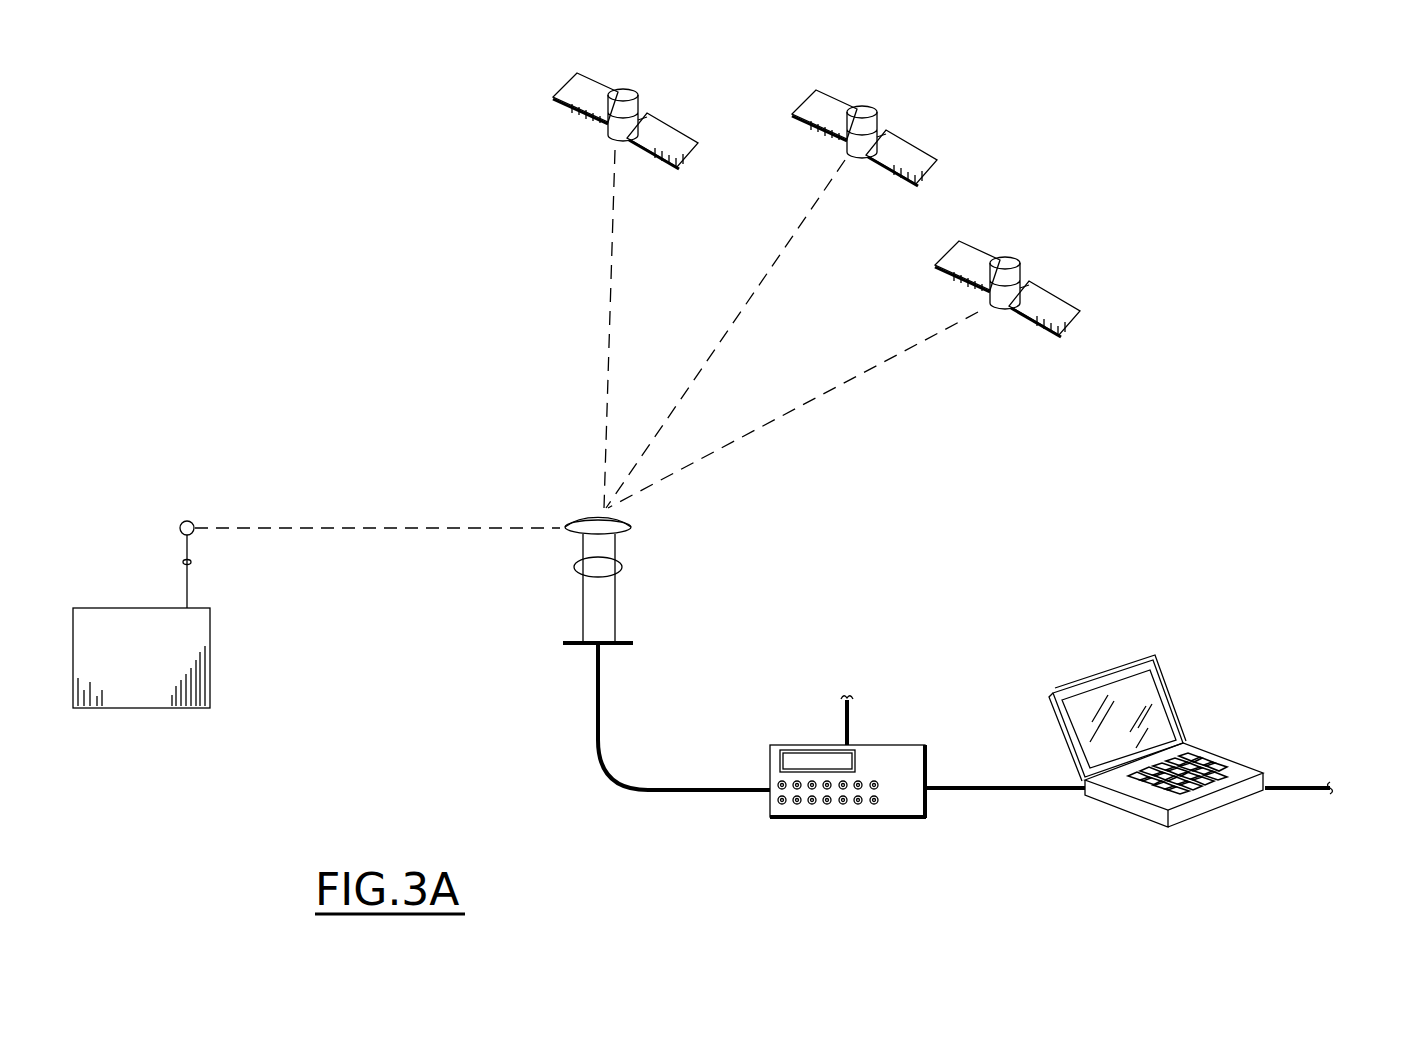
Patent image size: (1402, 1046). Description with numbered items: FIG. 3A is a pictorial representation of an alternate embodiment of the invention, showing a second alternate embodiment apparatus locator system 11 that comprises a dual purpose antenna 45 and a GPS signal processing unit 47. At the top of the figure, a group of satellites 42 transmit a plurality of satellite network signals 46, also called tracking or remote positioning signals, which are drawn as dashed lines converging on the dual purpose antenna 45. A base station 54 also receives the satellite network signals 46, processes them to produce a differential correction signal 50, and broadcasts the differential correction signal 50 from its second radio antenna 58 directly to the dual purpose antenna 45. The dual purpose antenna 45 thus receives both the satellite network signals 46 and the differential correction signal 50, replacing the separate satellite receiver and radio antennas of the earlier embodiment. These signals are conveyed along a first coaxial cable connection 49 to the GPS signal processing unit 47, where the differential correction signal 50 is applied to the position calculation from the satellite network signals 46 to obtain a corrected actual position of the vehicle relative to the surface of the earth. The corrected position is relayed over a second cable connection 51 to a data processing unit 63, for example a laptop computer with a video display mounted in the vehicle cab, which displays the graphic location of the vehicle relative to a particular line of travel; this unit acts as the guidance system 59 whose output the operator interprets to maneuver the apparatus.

The GPS satellites 42 is at (968, 112).
The satellite network signals 46 is at (695, 372).
The dual purpose antenna 45 is at (616, 583).
The apparatus locator system 11 is at (655, 613).
The first coaxial cable connection 49 is at (605, 770).
The GPS signal processing unit 47 is at (775, 825).
The second cable connection 51 is at (1050, 782).
The guidance system 59 is at (1180, 665).
The data processing unit 63 is at (1148, 822).
The differential correction signal 50 is at (378, 524).
The second radio antenna 58 is at (188, 578).
The base station 54 is at (212, 660).